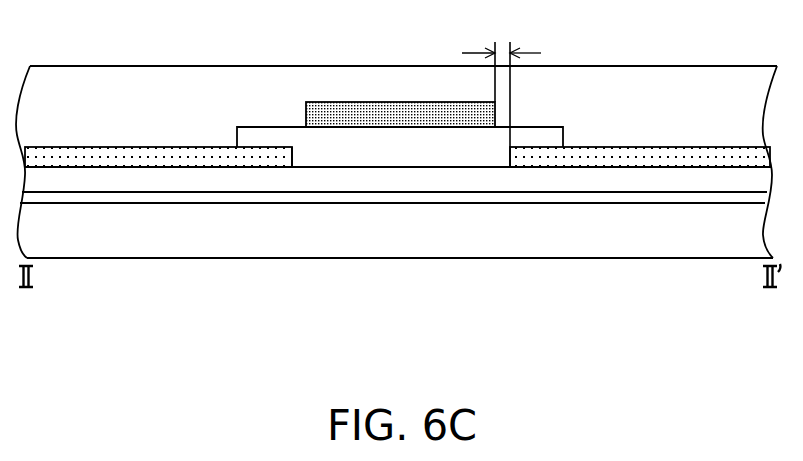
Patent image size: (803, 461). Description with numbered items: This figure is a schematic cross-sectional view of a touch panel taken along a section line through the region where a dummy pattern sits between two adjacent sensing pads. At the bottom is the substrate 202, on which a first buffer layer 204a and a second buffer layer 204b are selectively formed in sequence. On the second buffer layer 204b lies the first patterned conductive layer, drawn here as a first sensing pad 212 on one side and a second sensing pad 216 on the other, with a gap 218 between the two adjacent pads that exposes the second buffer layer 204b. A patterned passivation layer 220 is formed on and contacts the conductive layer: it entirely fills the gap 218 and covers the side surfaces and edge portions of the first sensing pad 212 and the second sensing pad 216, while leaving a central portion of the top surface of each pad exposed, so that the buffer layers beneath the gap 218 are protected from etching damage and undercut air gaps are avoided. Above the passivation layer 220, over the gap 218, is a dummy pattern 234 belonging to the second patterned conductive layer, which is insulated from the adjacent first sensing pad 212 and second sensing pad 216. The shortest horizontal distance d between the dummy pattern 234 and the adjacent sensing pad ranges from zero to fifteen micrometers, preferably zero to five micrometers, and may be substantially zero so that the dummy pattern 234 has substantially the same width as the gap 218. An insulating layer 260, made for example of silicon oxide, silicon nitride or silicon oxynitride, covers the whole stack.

The substrate 202 is at (695, 244).
The first buffer layer 204a is at (475, 198).
The second buffer layer 204b is at (548, 183).
The first sensing pad 212 is at (633, 155).
The second sensing pad 216 is at (137, 157).
The gap 218 is at (403, 153).
The patterned passivation layer 220 is at (272, 135).
The dummy pattern 234 is at (443, 112).
The insulating layer 260 is at (742, 82).
The shortest horizontal distance d is at (501, 92).